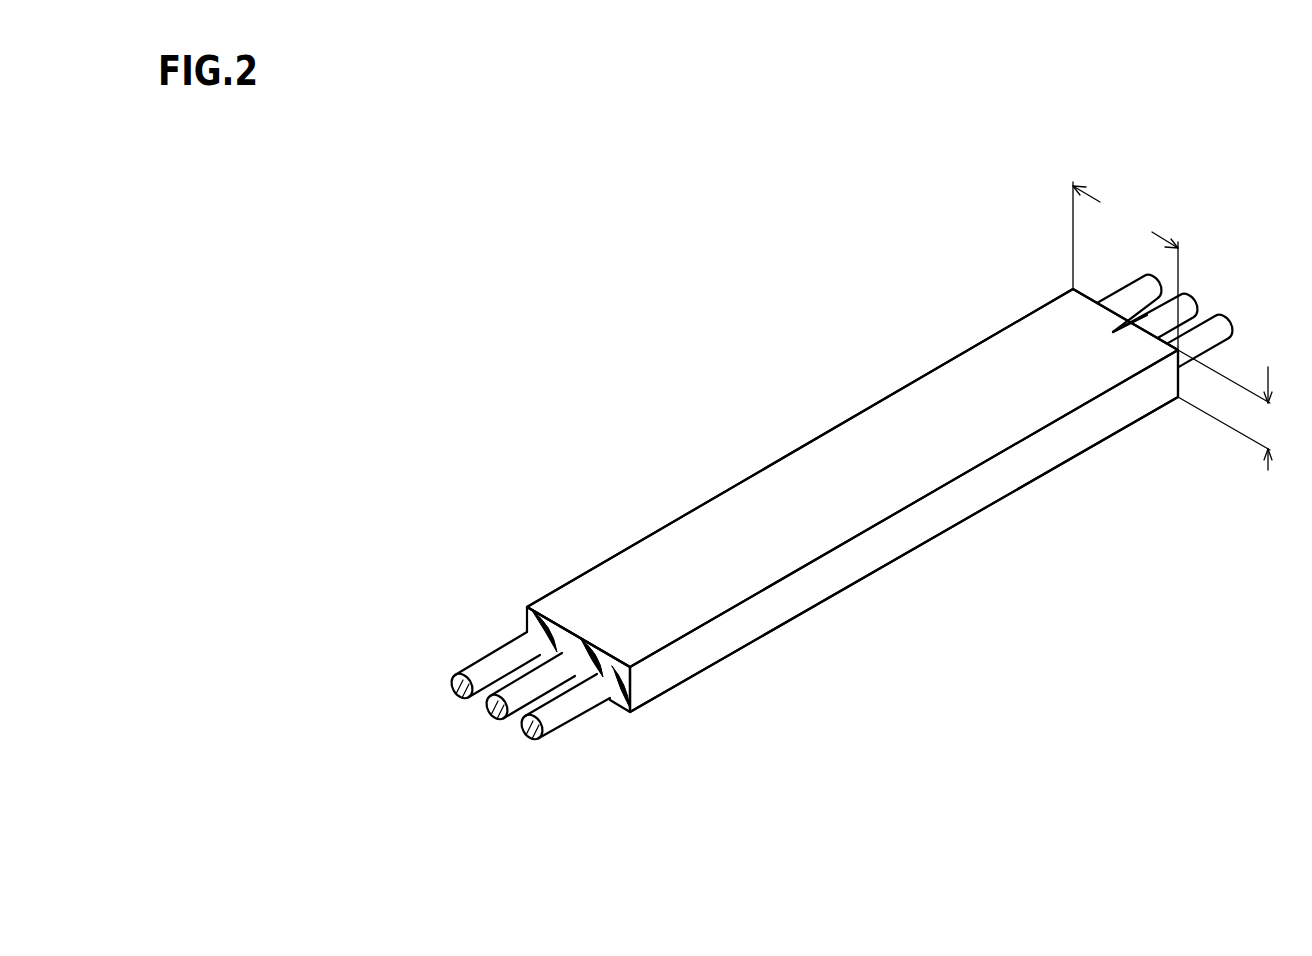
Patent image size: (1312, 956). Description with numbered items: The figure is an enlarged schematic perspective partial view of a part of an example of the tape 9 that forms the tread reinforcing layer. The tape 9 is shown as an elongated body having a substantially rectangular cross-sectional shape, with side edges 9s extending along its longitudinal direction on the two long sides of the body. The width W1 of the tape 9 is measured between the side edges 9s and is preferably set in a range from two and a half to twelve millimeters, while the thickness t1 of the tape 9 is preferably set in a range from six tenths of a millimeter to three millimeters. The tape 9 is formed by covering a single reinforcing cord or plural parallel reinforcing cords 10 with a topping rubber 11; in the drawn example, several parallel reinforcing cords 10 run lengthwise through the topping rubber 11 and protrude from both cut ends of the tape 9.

The tape 9 is at (872, 453).
The side edges 9s is at (743, 477).
The reinforcing cords 10 is at (482, 672).
The topping rubber 11 is at (527, 613).
The width W1 is at (1125, 266).
The thickness t1 is at (1228, 410).